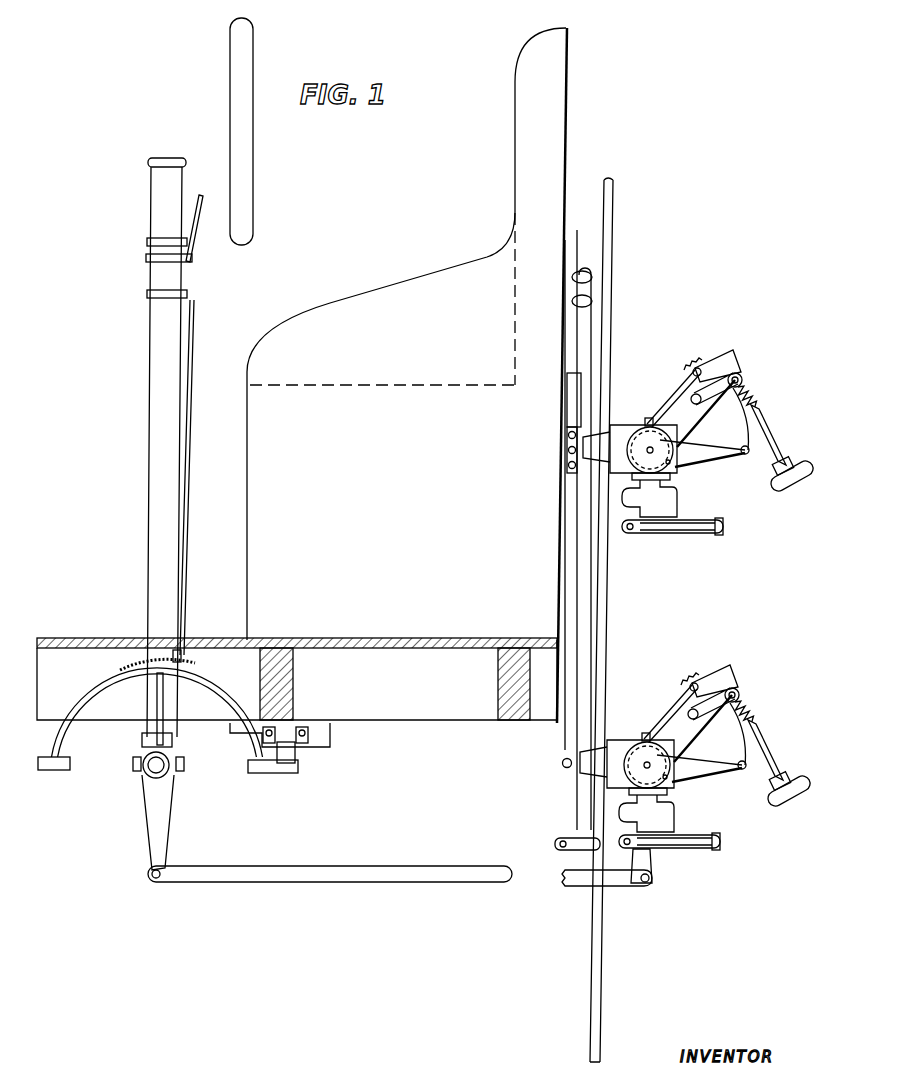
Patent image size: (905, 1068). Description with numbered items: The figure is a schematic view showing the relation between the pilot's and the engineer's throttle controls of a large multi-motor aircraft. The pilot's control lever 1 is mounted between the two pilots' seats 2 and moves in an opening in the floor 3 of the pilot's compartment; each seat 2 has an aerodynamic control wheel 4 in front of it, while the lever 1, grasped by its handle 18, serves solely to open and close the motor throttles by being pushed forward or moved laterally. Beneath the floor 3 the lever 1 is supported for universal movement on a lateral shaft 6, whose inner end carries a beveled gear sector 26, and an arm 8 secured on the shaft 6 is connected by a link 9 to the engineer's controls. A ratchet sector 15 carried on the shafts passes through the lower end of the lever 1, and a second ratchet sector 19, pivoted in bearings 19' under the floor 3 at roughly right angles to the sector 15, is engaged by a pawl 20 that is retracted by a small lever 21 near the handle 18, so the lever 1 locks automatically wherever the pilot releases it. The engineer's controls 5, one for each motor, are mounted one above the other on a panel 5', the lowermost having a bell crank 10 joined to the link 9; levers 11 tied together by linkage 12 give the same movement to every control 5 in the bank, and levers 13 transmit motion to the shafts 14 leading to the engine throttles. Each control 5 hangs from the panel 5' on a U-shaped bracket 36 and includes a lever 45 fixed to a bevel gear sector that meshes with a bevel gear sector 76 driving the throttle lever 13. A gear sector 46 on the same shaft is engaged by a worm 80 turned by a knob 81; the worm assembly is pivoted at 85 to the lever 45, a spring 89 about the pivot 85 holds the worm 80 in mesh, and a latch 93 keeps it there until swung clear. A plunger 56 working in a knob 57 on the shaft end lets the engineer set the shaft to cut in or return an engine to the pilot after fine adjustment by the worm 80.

The pilot's control lever 1 is at (168, 355).
The pilots' seats 2 is at (302, 318).
The floor 3 is at (95, 638).
The aerodynamic control wheel 4 is at (249, 184).
The engineer's control 5 is at (790, 577).
The panel 5' is at (634, 620).
The shaft 6 is at (148, 777).
The arm 8 is at (170, 837).
The link 9 is at (415, 882).
The bell crank 10 is at (650, 863).
The lever 11 is at (582, 442).
The linkage 12 is at (574, 388).
The lever 13 is at (717, 525).
The shaft 14 is at (587, 327).
The ratchet sector 15 is at (160, 708).
The handle 18 is at (162, 202).
The ratchet sector 19 is at (168, 720).
The bearings 19' is at (299, 744).
The pawl 20 is at (178, 658).
The small lever 21 is at (202, 240).
The beveled gear sector 26 is at (180, 757).
The bracket 36 is at (617, 425).
The lever 45 is at (668, 417).
The gear sector 46 is at (736, 418).
The plunger 56 is at (651, 428).
The knob 57 is at (669, 463).
The bevel gear sector 76 is at (673, 484).
The worm 80 is at (747, 393).
The knob 81 is at (783, 497).
The pivot 85 is at (741, 380).
The spring 89 is at (700, 367).
The latch 93 is at (723, 363).